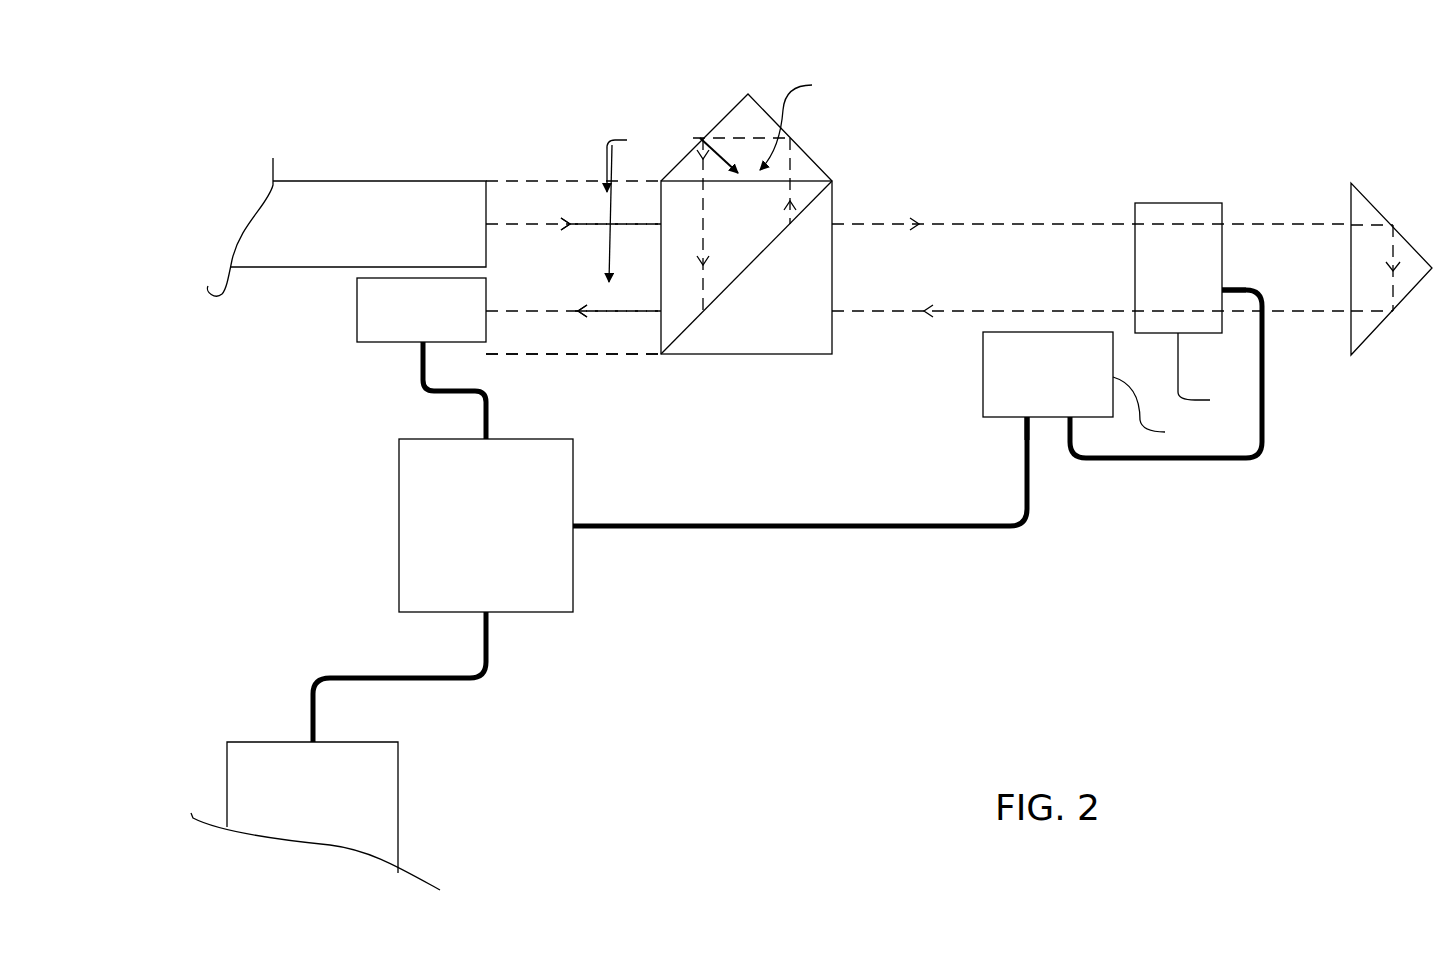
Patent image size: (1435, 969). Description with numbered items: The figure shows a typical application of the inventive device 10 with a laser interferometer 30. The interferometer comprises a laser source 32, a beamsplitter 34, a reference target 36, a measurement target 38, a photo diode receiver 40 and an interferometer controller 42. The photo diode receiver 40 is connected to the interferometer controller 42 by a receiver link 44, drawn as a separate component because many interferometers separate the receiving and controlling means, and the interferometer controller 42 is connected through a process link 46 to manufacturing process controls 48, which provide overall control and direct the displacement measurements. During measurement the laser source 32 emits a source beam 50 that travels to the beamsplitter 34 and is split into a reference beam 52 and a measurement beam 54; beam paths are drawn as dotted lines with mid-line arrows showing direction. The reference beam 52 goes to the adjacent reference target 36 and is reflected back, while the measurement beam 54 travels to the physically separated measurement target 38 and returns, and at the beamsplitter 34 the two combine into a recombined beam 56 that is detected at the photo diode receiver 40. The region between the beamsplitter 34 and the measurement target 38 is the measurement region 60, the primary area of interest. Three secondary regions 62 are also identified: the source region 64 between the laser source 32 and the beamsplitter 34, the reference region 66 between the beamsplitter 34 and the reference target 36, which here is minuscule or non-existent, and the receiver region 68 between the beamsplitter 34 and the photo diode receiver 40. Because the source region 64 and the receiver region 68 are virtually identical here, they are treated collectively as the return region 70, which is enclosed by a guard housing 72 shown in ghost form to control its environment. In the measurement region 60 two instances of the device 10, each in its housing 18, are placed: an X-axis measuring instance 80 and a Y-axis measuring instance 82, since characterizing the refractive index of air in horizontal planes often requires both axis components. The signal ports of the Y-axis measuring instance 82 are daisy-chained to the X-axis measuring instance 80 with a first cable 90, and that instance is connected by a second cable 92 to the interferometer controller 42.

The inventive device 10 is at (1102, 310).
The housing 18 is at (1222, 290).
The laser interferometer 30 is at (570, 128).
The laser source 32 is at (346, 227).
The beamsplitter 34 is at (748, 354).
The reference target 36 is at (755, 100).
The measurement target 38 is at (1348, 205).
The photo diode receiver 40 is at (421, 310).
The interferometer controller 42 is at (486, 525).
The receiver link 44 is at (420, 383).
The process link 46 is at (475, 678).
The manufacturing process controls 48 is at (315, 816).
The source beam 50 is at (558, 224).
The reference beam 52 is at (728, 148).
The measurement beam 54 is at (1005, 225).
The recombined beam 56 is at (552, 311).
The measurement region 60 is at (1091, 285).
The secondary regions 62 is at (633, 204).
The source region 64 is at (615, 206).
The reference region 66 is at (802, 121).
The receiver region 68 is at (615, 292).
The return region 70 is at (573, 267).
The guard housing 72 is at (627, 354).
The X-axis measuring instance 80 is at (1155, 412).
The Y-axis measuring instance 82 is at (1211, 373).
The first cable 90 is at (1222, 462).
The second cable 92 is at (880, 527).